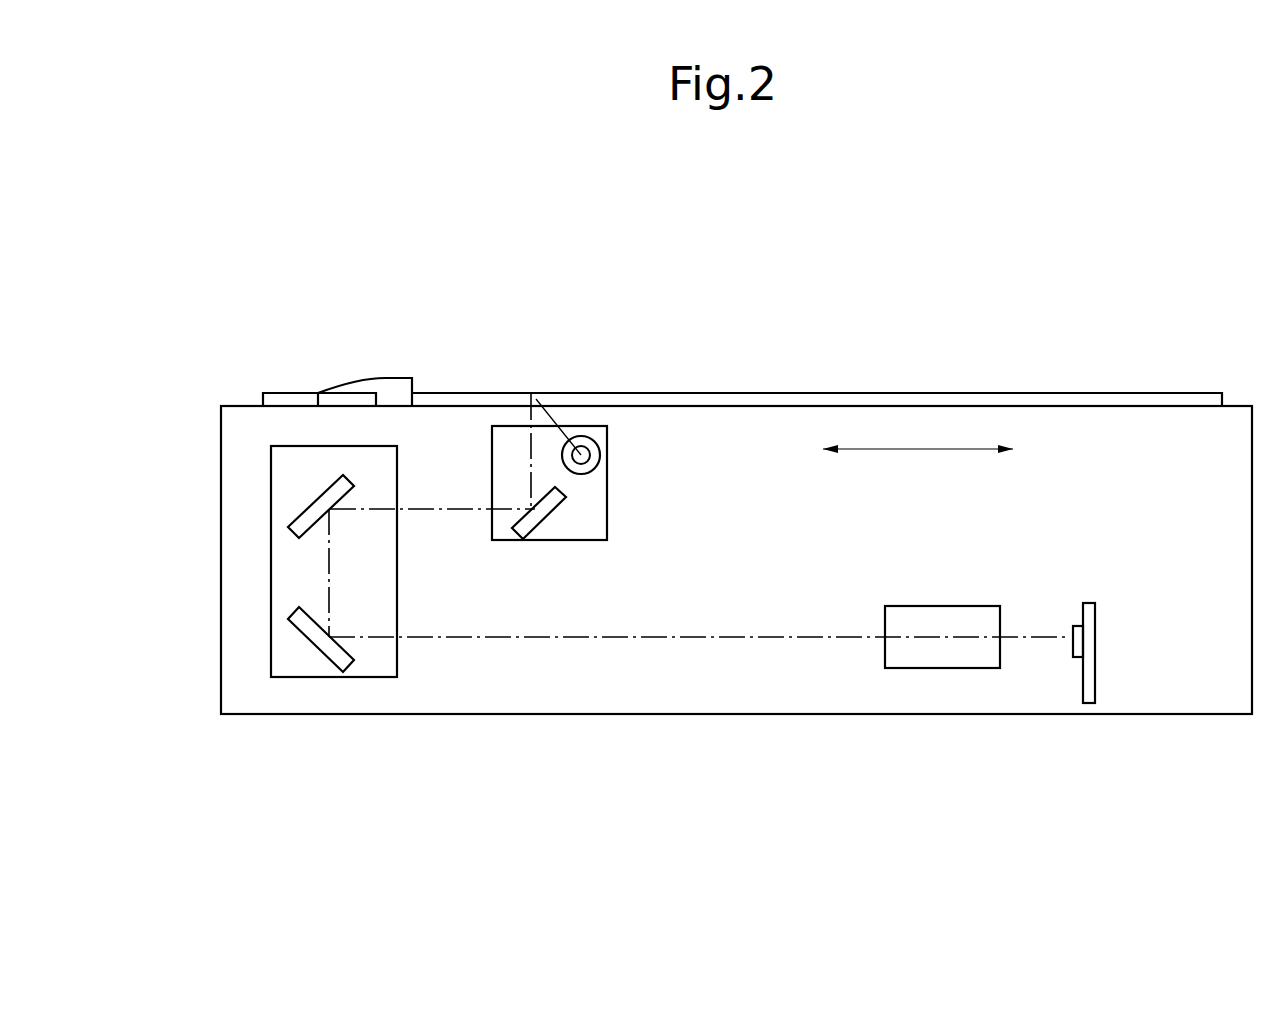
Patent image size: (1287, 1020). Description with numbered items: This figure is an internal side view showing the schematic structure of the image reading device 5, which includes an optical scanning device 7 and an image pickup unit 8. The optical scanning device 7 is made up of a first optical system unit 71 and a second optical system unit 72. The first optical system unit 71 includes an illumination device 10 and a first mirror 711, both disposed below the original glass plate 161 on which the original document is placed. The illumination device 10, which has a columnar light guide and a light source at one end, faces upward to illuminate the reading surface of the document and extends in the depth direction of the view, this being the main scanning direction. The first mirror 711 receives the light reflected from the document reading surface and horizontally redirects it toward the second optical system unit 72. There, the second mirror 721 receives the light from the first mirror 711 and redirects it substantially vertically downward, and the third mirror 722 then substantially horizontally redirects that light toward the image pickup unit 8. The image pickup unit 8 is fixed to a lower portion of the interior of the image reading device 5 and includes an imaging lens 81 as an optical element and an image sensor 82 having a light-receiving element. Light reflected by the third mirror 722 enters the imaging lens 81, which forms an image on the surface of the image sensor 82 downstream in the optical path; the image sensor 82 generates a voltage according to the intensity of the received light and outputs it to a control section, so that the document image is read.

The image reading device 5 is at (1155, 349).
The original glass plate 161 is at (723, 393).
The illumination device 10 is at (588, 435).
The optical scanning device 7 is at (709, 543).
The first optical system unit 71 is at (607, 462).
The first mirror 711 is at (547, 518).
The second optical system unit 72 is at (272, 572).
The second mirror 721 is at (313, 498).
The third mirror 722 is at (313, 648).
The image pickup unit 8 is at (1109, 584).
The imaging lens 81 is at (942, 606).
The image sensor 82 is at (1095, 648).